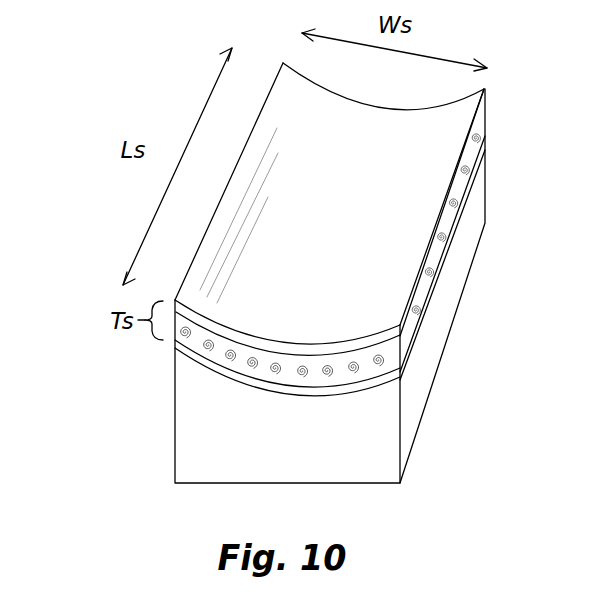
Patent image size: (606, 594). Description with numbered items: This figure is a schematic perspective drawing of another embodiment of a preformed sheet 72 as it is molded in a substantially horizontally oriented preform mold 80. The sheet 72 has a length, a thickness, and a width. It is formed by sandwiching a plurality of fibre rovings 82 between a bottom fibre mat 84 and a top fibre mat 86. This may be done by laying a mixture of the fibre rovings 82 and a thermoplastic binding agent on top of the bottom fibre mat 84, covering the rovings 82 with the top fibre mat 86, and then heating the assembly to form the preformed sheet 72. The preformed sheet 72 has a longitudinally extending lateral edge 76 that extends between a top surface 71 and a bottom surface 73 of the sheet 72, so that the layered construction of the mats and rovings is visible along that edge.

The top surface 71 is at (342, 219).
The preformed sheet 72 is at (503, 120).
The bottom surface 73 is at (310, 397).
The longitudinally extending lateral edge 76 is at (460, 184).
The preform mold 80 is at (203, 420).
The fibre rovings 82 is at (390, 352).
The bottom fibre mat 84 is at (387, 377).
The top fibre mat 86 is at (387, 333).